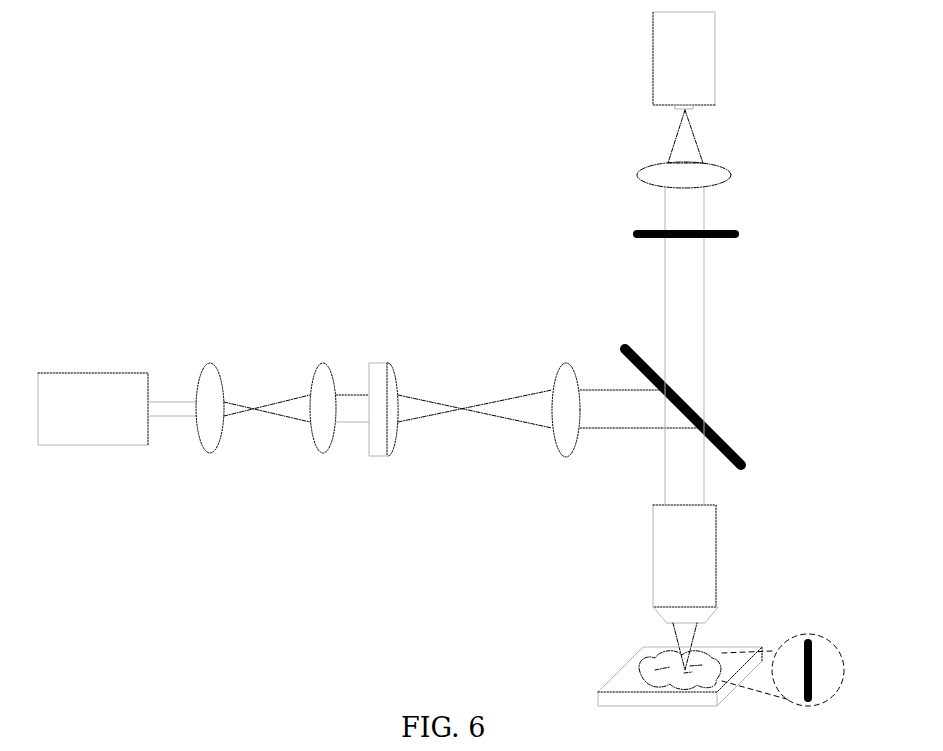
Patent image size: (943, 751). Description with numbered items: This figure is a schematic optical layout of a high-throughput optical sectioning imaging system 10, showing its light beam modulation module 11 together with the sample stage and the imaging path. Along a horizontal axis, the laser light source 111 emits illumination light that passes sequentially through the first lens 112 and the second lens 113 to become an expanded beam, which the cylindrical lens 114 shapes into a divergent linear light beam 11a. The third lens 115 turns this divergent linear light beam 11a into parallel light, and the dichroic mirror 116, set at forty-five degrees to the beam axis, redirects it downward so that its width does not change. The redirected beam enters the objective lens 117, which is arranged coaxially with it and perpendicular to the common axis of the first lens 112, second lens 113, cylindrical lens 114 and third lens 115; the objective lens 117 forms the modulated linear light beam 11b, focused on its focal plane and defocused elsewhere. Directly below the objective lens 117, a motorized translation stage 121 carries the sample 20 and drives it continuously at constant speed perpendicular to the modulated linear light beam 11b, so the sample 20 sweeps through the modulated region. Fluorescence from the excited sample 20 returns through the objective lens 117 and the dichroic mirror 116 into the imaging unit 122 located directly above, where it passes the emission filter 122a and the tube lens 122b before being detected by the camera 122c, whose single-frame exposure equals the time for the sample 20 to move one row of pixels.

The high-throughput optical sectioning imaging system 10 is at (351, 103).
The light beam modulation module 11 is at (627, 497).
The linear light beam 11a is at (417, 407).
The modulated linear light beam 11b is at (803, 655).
The sample 20 is at (640, 668).
The laser light source 111 is at (112, 428).
The first lens 112 is at (210, 435).
The second lens 113 is at (317, 437).
The cylindrical lens 114 is at (382, 435).
The third lens 115 is at (560, 430).
The dichroic mirror 116 is at (657, 407).
The objective lens 117 is at (678, 557).
The translation stage 121 is at (625, 690).
The imaging unit 122 is at (788, 217).
The emission filter 122a is at (712, 230).
The tube lens 122b is at (702, 175).
The camera 122c is at (693, 73).